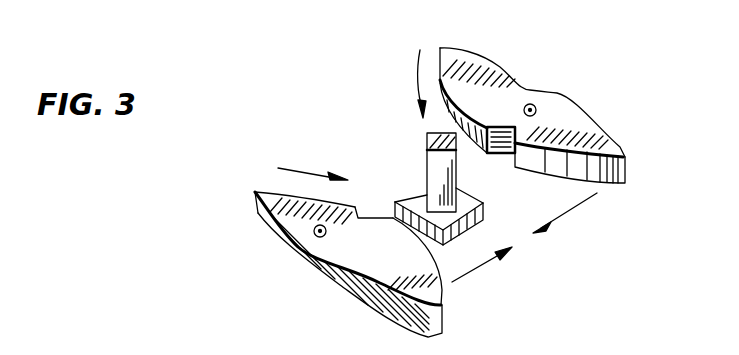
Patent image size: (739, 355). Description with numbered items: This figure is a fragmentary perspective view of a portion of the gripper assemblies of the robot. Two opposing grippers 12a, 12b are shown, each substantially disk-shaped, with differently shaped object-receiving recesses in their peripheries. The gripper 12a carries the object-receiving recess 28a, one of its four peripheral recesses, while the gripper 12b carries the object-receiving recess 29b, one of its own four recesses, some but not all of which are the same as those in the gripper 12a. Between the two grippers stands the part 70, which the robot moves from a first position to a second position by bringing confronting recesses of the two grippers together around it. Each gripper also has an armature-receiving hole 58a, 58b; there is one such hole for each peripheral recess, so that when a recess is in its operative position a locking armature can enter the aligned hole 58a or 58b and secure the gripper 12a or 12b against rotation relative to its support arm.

The gripper 12a is at (270, 230).
The gripper 12b is at (460, 63).
The object-receiving recess 28a is at (370, 210).
The object-receiving recess 29b is at (505, 154).
The armature-receiving hole 58a is at (315, 233).
The armature-receiving hole 58b is at (530, 103).
The part 70 is at (433, 163).